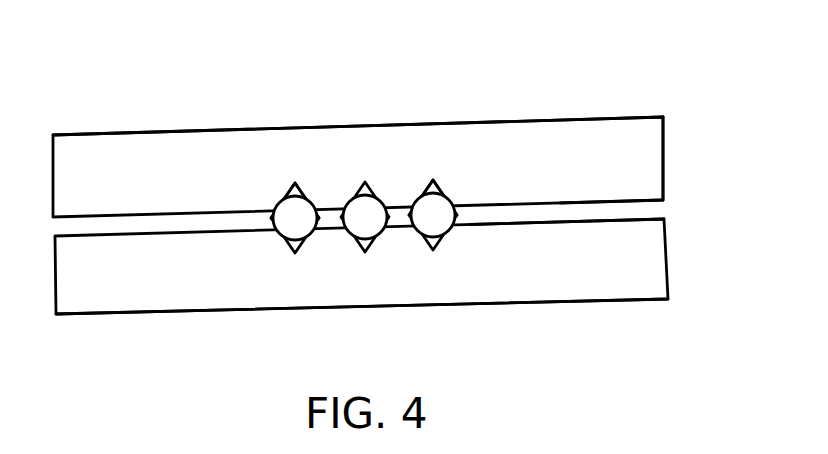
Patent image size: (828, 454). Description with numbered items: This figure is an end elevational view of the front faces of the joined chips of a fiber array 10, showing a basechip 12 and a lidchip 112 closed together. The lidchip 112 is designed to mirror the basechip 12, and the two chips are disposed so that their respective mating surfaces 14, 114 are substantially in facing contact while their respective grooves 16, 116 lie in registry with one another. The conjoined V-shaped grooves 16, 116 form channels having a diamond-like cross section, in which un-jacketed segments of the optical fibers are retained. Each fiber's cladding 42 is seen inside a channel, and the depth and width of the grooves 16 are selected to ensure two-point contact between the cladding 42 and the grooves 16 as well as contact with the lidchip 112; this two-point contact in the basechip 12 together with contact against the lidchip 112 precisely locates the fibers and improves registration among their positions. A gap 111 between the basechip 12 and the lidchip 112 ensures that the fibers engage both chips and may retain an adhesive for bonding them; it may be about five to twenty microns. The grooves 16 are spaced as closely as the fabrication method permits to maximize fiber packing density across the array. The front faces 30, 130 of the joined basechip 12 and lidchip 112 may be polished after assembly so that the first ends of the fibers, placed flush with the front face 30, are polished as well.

The fiber array 10 is at (393, 185).
The basechip 12 is at (132, 290).
The lidchip 112 is at (137, 188).
The mating surface 14 is at (508, 222).
The grooves 16 is at (297, 253).
The front face 30 is at (188, 293).
The cladding 42 is at (435, 190).
The gap 111 is at (658, 207).
The mating surface 114 is at (608, 200).
The grooves 116 is at (290, 190).
The front face 130 is at (560, 130).